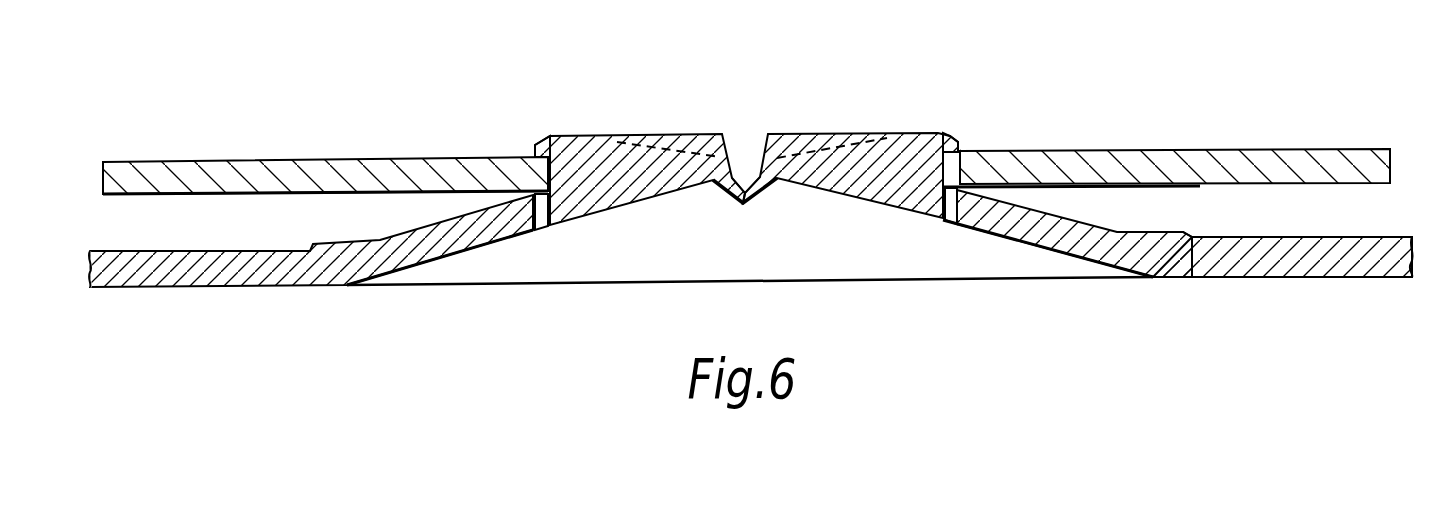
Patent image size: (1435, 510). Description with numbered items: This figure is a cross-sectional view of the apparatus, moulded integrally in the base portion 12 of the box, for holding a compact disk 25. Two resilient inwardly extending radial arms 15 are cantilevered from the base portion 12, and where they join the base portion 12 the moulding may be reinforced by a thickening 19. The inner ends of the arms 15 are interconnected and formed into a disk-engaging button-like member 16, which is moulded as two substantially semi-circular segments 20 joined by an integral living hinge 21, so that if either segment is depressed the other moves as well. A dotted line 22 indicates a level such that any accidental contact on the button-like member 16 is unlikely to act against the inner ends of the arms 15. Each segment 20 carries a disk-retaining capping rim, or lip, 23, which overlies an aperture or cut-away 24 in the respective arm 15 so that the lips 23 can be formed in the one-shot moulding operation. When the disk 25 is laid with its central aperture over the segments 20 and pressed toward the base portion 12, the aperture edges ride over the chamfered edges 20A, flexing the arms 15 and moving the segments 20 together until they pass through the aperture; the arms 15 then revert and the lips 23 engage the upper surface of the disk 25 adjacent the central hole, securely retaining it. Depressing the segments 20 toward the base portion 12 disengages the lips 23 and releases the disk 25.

The base portion 12 is at (1330, 255).
The radial arm 15 is at (1037, 235).
The button-like member 16 is at (824, 120).
The thickening 19 is at (1167, 232).
The semi-circular segment 20 is at (575, 136).
The chamfered edge 20A is at (540, 145).
The living hinge 21 is at (730, 203).
The dotted line 22 is at (684, 140).
The capping rim 23 is at (960, 144).
The aperture 24 is at (543, 222).
The compact disk 25 is at (283, 172).